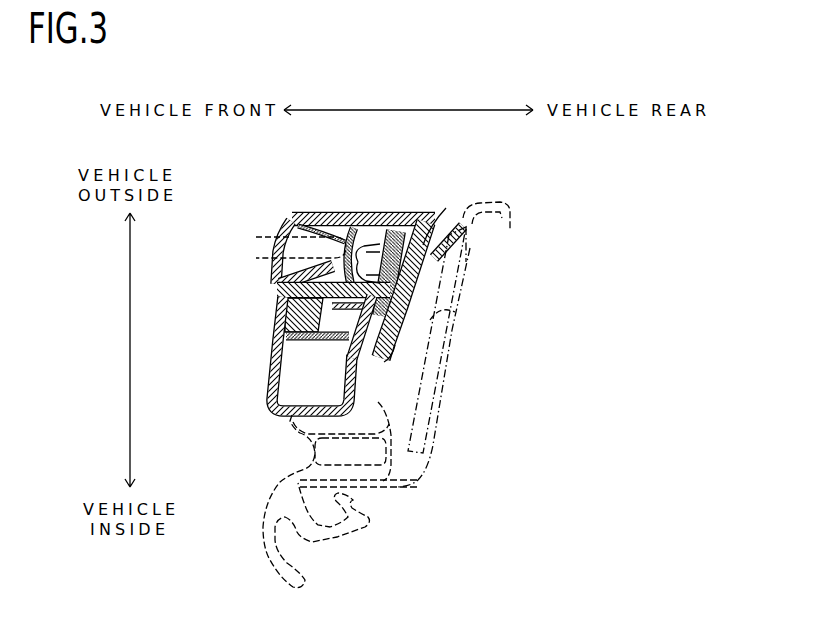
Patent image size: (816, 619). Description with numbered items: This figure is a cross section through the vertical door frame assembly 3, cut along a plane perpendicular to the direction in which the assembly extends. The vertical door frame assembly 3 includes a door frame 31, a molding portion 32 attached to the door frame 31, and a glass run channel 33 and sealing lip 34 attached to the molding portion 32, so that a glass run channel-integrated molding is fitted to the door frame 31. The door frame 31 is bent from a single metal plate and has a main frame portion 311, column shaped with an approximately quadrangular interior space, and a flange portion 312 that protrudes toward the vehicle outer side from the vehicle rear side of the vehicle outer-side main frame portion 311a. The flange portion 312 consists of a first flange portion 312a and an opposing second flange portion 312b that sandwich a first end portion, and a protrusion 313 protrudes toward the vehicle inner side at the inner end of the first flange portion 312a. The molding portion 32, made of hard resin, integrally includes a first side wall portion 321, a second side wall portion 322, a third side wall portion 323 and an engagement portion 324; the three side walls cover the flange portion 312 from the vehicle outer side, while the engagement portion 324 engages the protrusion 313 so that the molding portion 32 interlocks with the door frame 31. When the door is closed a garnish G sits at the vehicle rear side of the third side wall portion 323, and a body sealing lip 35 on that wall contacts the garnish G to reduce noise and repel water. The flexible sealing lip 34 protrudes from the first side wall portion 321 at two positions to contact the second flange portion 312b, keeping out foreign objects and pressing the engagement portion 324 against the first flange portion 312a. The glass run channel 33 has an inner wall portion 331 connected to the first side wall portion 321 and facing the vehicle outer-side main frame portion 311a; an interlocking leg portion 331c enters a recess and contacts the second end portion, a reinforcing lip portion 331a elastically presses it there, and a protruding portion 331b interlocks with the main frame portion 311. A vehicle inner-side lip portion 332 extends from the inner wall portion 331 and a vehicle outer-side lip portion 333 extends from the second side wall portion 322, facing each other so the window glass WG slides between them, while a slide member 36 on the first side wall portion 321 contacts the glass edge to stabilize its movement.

The vertical door frame assembly 3 is at (283, 158).
The door frame 31 is at (235, 357).
The main frame portion 311 is at (253, 388).
The vehicle outer-side main frame portion 311a is at (452, 321).
The protrusion 313 is at (372, 352).
The molding portion 32 is at (412, 194).
The first side wall portion 321 is at (371, 213).
The second side wall portion 322 is at (330, 215).
The third side wall portion 323 is at (446, 208).
The engagement portion 324 is at (398, 355).
The flange portion 312 is at (418, 288).
The first flange portion 312a is at (413, 316).
The second flange portion 312b is at (352, 222).
The glass run channel 33 is at (258, 216).
The inner wall portion 331 is at (280, 293).
The reinforcing lip portion 331a is at (281, 325).
The protruding portion 331b is at (276, 306).
The interlocking leg portion 331c is at (322, 362).
The vehicle inner-side lip portion 332 is at (271, 257).
The vehicle outer-side lip portion 333 is at (268, 242).
The sealing lip 34 is at (396, 216).
The body sealing lip 35 is at (468, 235).
The slide member 36 is at (356, 266).
The window glass WG is at (256, 241).
The garnish G is at (467, 258).